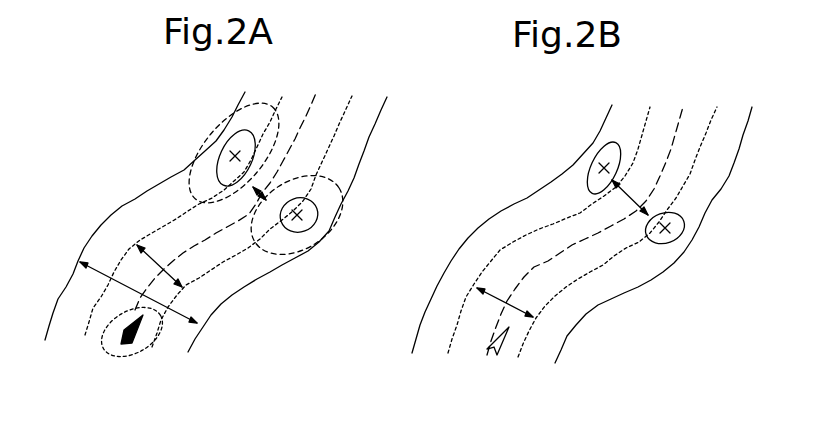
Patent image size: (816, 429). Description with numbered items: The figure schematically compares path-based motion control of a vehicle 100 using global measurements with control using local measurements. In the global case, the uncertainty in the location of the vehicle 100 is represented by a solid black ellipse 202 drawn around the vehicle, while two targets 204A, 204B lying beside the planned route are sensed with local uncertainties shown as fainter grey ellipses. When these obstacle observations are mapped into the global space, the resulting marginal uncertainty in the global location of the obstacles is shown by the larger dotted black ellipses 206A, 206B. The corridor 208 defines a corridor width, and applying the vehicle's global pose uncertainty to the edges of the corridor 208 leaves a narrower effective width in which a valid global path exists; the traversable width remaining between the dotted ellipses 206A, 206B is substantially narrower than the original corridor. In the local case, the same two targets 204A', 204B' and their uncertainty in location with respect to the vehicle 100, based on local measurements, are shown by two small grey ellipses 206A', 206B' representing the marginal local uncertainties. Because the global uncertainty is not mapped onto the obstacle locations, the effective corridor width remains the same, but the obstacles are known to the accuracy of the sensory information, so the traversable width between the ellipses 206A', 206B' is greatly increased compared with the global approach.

In FIG. 2A, the vehicle 100 is at (133, 344).
In FIG. 2B, the vehicle 100 is at (497, 355).
In FIG. 2A, the solid black ellipse 202 is at (110, 348).
In FIG. 2A, the target 204A is at (184, 142).
In FIG. 2A, the target 204B is at (349, 218).
In FIG. 2B, the target 204A' is at (579, 125).
In FIG. 2B, the target 204B' is at (678, 267).
In FIG. 2A, the dotted black ellipse 206A is at (209, 153).
In FIG. 2A, the dotted black ellipse 206B is at (335, 211).
In FIG. 2A, the grey ellipse 206A' is at (175, 158).
In FIG. 2B, the grey ellipse 206A' is at (574, 159).
In FIG. 2A, the grey ellipse 206B' is at (323, 234).
In FIG. 2B, the grey ellipse 206B' is at (708, 228).
In FIG. 2A, the corridor 208 is at (236, 297).